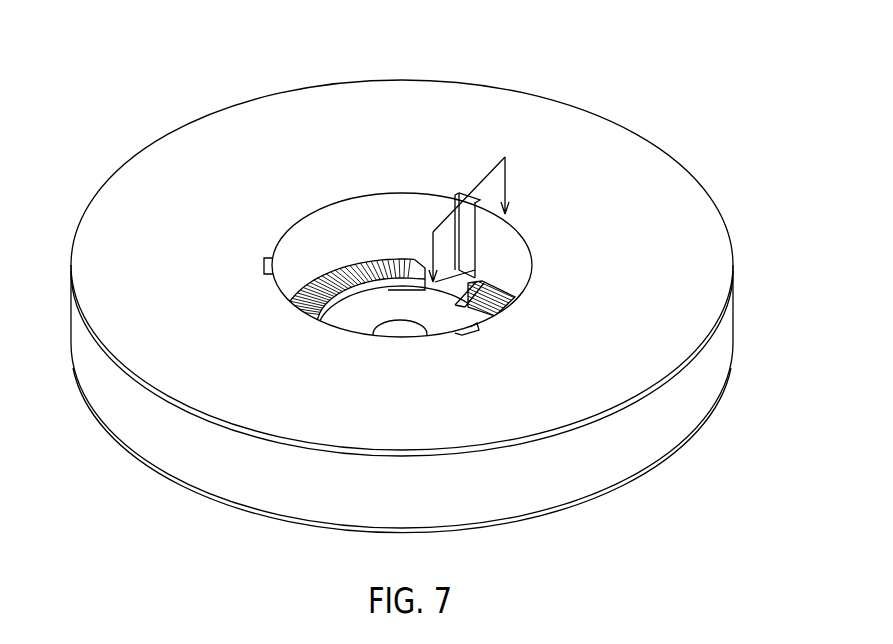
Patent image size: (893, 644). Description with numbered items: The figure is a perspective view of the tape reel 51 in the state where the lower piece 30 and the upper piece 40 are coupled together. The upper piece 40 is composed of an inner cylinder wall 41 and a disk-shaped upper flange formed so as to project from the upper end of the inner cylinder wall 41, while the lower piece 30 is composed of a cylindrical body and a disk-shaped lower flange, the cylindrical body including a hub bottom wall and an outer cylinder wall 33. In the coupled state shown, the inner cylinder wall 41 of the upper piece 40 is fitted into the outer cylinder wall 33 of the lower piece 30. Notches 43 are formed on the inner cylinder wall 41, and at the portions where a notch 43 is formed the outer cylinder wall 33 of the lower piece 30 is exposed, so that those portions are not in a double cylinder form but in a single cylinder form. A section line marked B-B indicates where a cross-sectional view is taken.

The lower piece 30 is at (658, 481).
The upper piece 40 is at (553, 91).
The inner cylinder wall 41 is at (404, 220).
The outer cylinder wall 33 is at (465, 240).
The notch 43 is at (473, 215).
The tape reel 51 is at (388, 307).